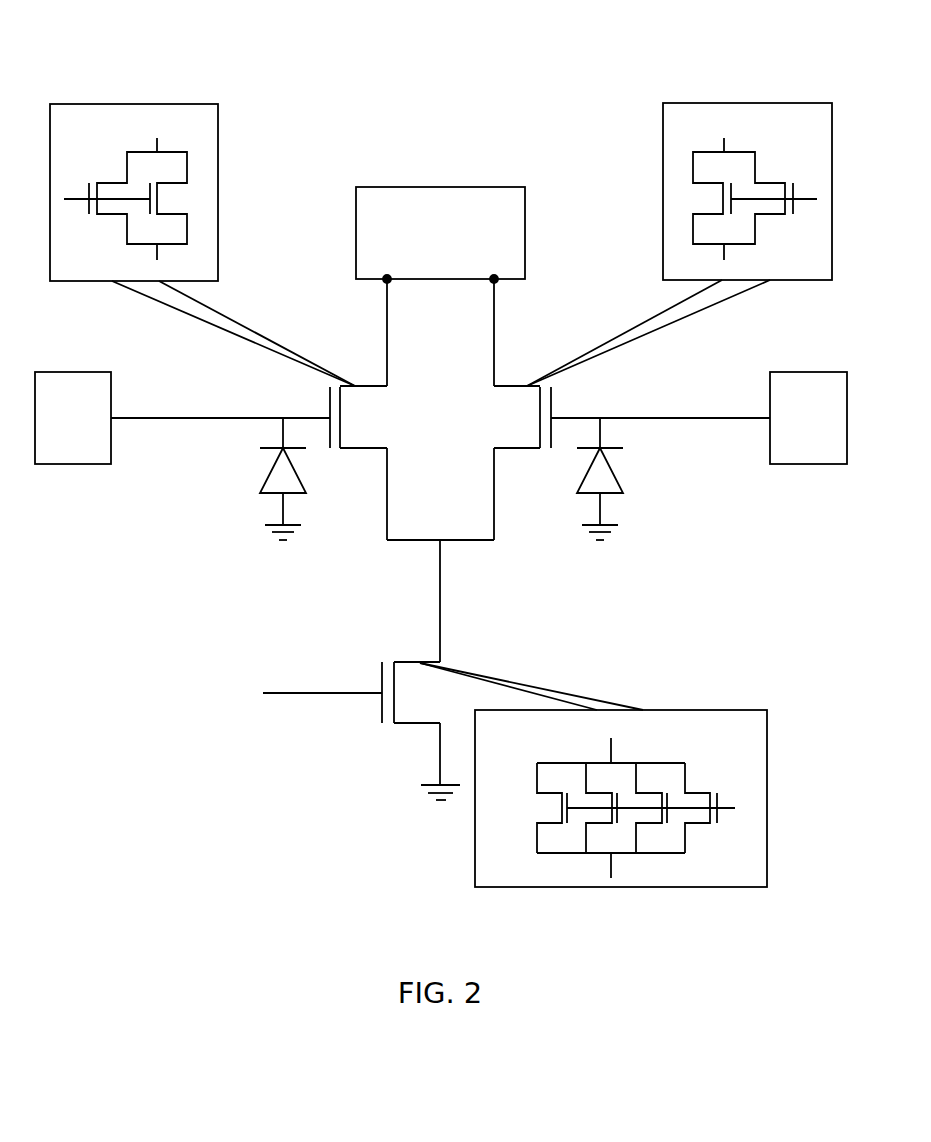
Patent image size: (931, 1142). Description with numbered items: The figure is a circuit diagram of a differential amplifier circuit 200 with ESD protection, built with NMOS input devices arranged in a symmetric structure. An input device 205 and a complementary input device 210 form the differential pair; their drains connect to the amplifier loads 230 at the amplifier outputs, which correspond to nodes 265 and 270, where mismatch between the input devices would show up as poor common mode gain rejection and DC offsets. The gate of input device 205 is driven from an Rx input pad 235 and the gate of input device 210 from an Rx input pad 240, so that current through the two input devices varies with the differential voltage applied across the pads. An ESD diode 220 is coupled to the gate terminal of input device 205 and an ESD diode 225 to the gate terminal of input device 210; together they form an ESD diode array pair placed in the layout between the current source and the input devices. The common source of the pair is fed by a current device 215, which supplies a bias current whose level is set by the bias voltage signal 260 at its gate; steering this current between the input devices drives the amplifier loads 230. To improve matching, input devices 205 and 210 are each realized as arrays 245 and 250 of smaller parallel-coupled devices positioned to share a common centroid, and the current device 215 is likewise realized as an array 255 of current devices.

The differential amplifier circuit 200 is at (204, 20).
The input device 205 is at (373, 386).
The input device 210 is at (508, 386).
The current device 215 is at (418, 661).
The ESD diode 220 is at (290, 463).
The ESD diode 225 is at (590, 463).
The amplifier loads 230 is at (440, 233).
The Rx input pad 235 is at (182, 418).
The Rx input pad 240 is at (699, 418).
The array 245 is at (202, 245).
The array 250 is at (679, 244).
The array 255 is at (593, 775).
The bias voltage signal 260 is at (283, 692).
The node 265 is at (387, 300).
The node 270 is at (494, 300).